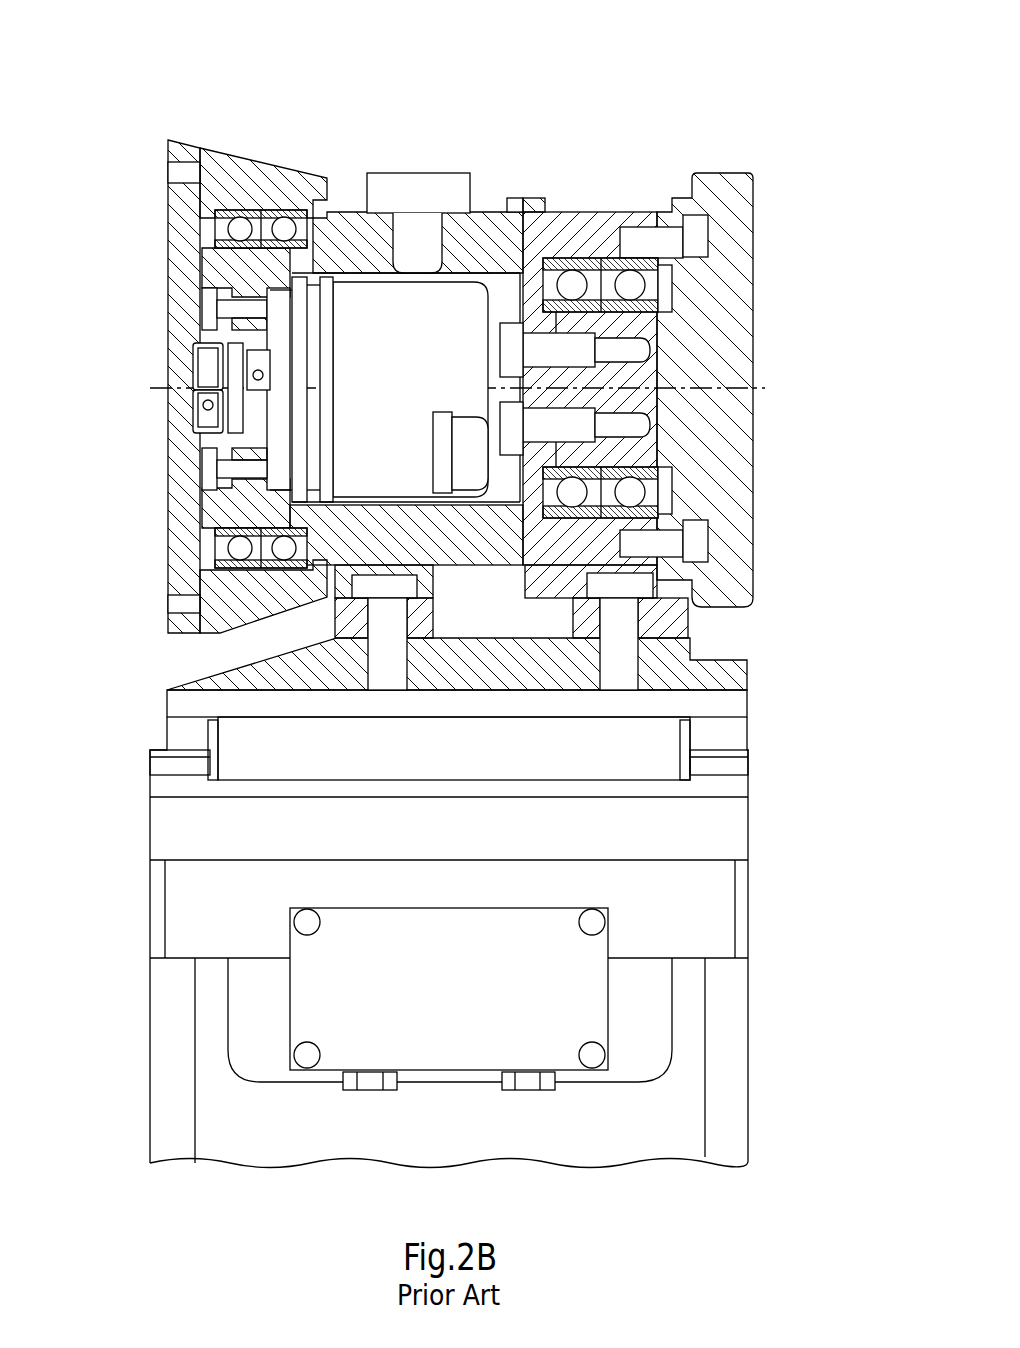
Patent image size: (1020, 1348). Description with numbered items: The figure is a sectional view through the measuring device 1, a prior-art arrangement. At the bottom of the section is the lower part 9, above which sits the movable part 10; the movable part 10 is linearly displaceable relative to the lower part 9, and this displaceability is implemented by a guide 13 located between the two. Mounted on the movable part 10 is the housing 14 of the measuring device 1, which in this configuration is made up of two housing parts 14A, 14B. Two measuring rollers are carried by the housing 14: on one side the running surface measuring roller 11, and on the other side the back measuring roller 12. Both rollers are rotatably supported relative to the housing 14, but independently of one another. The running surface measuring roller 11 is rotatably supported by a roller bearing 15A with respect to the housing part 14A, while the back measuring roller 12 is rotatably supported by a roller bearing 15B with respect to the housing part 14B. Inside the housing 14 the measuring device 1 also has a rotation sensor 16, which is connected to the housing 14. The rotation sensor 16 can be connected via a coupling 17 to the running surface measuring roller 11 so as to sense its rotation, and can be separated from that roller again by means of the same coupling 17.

The measuring device 1 is at (88, 72).
The lower part 9 is at (722, 828).
The movable part 10 is at (668, 653).
The running surface measuring roller 11 is at (231, 176).
The back measuring roller 12 is at (727, 196).
The guide 13 is at (652, 750).
The housing 14 is at (585, 122).
The housing part 14A is at (490, 210).
The housing part 14B is at (578, 226).
The roller bearing 15A is at (289, 222).
The roller bearing 15B is at (641, 256).
The rotation sensor 16 is at (416, 361).
The coupling 17 is at (212, 373).